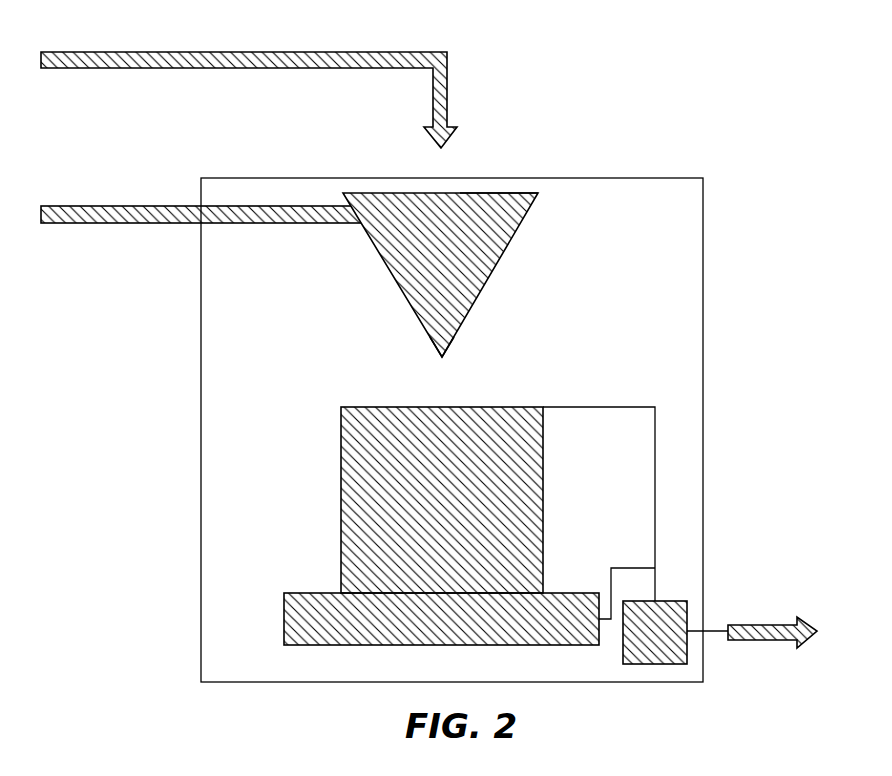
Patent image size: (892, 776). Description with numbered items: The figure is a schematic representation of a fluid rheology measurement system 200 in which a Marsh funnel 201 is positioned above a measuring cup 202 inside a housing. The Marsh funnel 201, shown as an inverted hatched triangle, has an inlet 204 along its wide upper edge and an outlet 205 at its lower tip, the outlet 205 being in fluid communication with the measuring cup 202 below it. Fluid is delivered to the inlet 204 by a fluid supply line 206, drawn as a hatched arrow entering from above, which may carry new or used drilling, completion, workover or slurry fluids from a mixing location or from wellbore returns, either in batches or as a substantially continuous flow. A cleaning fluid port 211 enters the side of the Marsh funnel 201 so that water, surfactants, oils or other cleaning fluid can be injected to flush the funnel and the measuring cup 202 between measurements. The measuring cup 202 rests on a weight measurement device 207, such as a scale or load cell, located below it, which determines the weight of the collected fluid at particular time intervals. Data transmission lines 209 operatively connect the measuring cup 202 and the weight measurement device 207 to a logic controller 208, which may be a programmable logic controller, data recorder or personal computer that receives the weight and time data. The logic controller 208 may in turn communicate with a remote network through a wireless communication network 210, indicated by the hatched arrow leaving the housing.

The fluid rheology system 200 is at (647, 76).
The Marsh funnel 201 is at (419, 258).
The measuring cup 202 is at (418, 512).
The inlet 204 is at (493, 193).
The outlet 205 is at (442, 357).
The fluid supply line 206 is at (142, 52).
The weight measurement device 207 is at (418, 628).
The logic controller 208 is at (678, 642).
The data transmission lines 209 is at (633, 567).
The wireless communication network 210 is at (762, 626).
The cleaning fluid port 211 is at (144, 206).